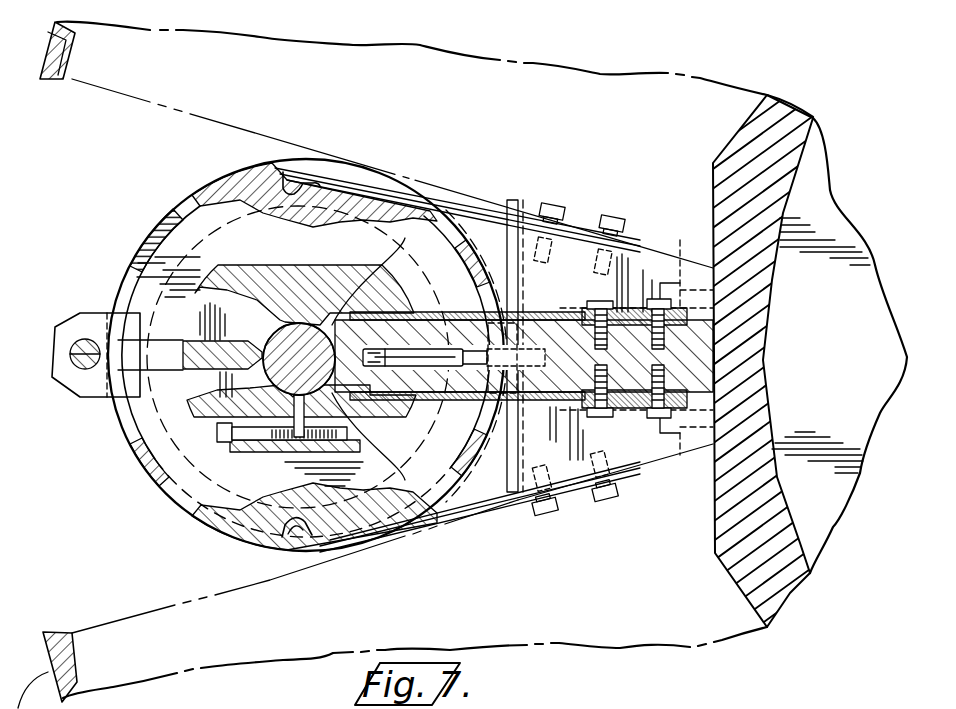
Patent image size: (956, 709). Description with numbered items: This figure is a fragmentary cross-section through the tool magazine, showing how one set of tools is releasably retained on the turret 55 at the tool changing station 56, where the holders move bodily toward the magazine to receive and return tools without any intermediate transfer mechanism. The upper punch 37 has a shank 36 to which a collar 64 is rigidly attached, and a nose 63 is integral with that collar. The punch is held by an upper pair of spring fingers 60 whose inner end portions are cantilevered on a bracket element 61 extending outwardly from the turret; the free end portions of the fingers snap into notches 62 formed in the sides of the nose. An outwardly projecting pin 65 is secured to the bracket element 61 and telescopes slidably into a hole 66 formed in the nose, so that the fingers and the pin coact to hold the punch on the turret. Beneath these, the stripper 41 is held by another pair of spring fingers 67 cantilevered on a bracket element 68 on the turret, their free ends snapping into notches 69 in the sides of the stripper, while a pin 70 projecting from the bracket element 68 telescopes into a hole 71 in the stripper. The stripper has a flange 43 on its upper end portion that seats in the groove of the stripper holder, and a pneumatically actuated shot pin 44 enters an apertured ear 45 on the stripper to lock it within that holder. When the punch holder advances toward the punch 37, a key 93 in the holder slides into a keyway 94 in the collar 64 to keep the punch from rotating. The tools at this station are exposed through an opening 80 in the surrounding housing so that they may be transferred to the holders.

The shank 36 is at (287, 318).
The punch 37 is at (250, 266).
The stripper 41 is at (239, 176).
The flange 43 is at (157, 488).
The shot pin 44 is at (72, 342).
The apertured ear 45 is at (82, 393).
The turret 55 is at (735, 147).
The tool changing station 56 is at (105, 162).
The spring fingers 60 is at (500, 294).
The bracket element 61 is at (630, 409).
The notches 62 is at (376, 226).
The nose 63 is at (390, 347).
The collar 64 is at (303, 270).
The pin 65 is at (410, 322).
The hole 66 is at (370, 397).
The spring fingers 67 is at (473, 197).
The bracket element 68 is at (663, 457).
The notches 69 is at (283, 167).
The pin 70 is at (540, 311).
The hole 71 is at (465, 418).
The opening 80 is at (110, 620).
The key 93 is at (200, 341).
The keyway 94 is at (200, 368).